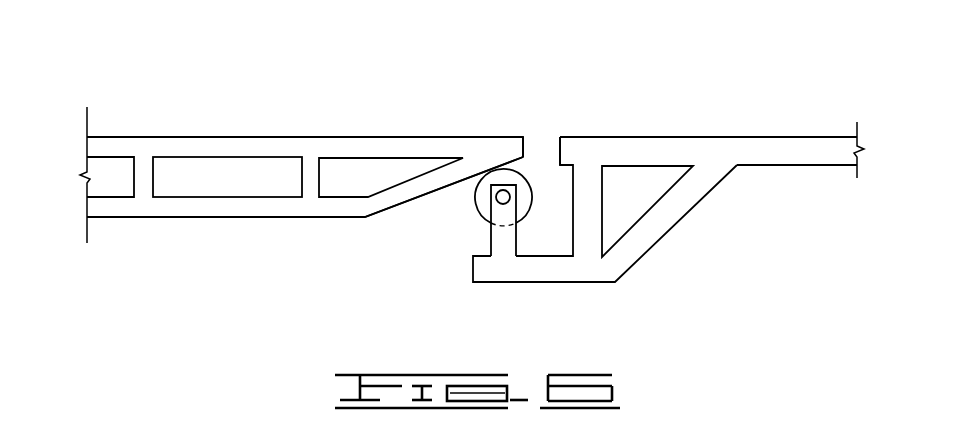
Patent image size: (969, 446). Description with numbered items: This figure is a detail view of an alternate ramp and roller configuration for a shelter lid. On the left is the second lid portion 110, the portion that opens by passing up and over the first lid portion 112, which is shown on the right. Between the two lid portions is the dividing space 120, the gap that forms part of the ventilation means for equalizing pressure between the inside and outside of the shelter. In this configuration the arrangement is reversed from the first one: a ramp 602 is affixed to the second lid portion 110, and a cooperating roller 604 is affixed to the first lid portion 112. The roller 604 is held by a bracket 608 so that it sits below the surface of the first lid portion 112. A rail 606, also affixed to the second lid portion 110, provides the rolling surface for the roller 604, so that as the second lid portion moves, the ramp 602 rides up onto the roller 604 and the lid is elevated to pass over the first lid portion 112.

The second lid portion 110 is at (208, 137).
The first lid portion 112 is at (773, 137).
The dividing space 120 is at (539, 134).
The ramp 602 is at (398, 207).
The roller 604 is at (475, 195).
The rail 606 is at (147, 217).
The bracket 608 is at (646, 292).